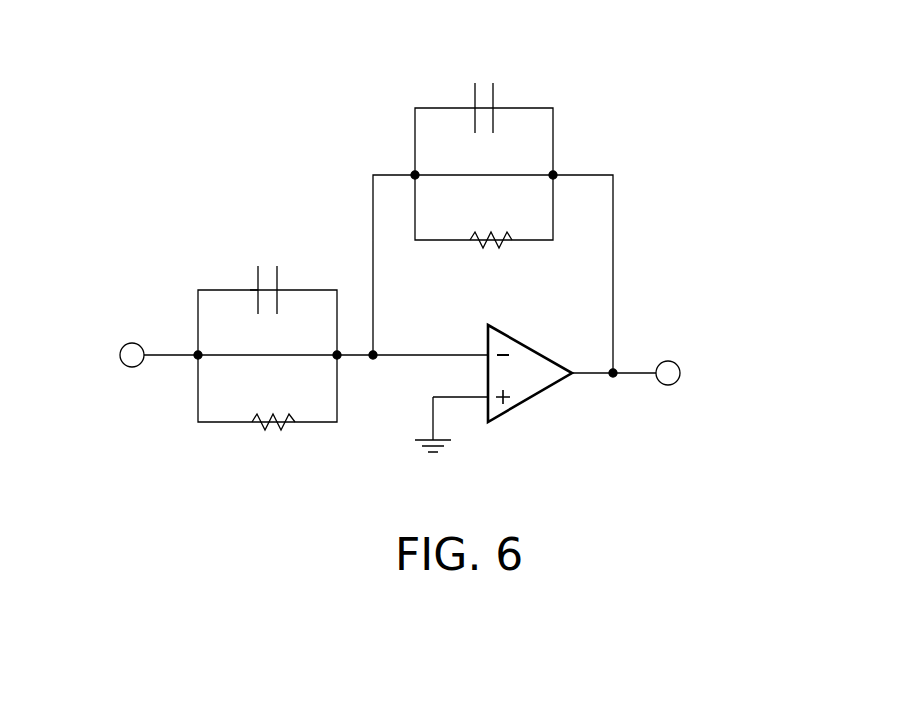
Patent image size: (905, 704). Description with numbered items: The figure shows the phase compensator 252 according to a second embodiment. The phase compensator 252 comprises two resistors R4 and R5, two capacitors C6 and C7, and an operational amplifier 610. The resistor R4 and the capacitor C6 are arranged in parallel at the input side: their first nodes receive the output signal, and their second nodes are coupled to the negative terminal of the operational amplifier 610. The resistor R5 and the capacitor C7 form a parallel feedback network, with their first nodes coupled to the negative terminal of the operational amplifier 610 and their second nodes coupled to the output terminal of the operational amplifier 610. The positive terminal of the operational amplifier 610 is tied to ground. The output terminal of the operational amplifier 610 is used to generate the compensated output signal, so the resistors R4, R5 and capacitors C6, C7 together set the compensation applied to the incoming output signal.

The phase compensator 252 is at (680, 108).
The operational amplifier 610 is at (522, 342).
The capacitor C6 is at (267, 275).
The capacitor C7 is at (486, 94).
The resistor R4 is at (273, 408).
The resistor R5 is at (491, 226).